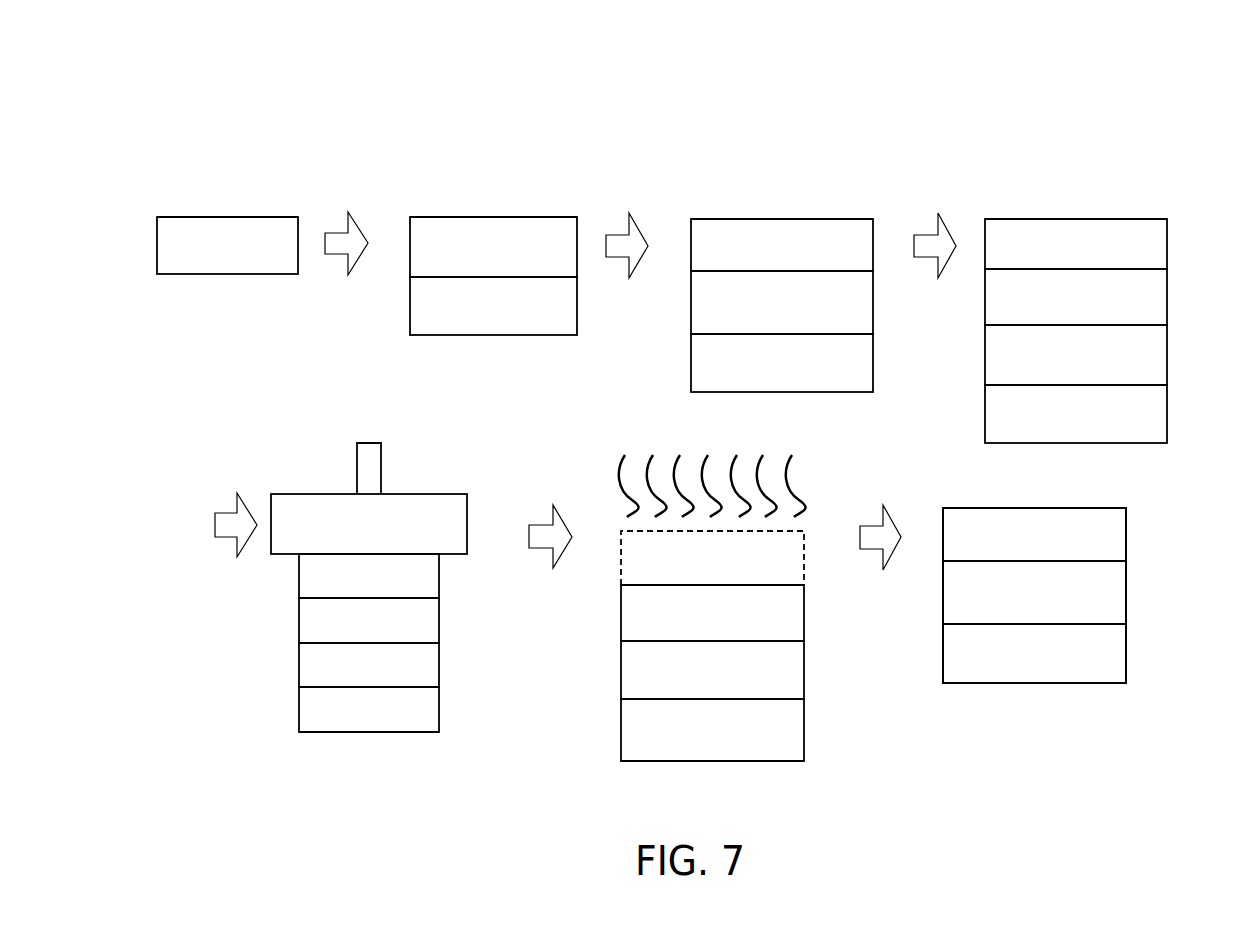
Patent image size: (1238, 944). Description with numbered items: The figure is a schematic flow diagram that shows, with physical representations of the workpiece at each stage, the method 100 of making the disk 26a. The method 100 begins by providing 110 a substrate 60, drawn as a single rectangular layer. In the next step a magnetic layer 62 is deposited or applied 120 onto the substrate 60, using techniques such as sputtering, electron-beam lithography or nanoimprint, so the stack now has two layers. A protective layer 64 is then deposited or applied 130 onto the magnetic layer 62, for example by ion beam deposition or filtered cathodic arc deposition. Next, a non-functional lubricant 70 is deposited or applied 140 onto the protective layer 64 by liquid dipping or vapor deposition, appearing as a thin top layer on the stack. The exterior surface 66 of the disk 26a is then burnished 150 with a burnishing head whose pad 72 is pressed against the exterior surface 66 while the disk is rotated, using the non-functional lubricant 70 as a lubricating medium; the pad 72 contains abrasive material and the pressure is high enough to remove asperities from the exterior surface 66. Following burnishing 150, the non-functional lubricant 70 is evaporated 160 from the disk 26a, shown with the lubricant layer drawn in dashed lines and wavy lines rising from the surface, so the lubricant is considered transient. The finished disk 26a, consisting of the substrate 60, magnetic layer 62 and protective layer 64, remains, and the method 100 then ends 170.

The method 100 is at (608, 161).
The providing step 110 is at (224, 184).
The applying step 120 is at (484, 197).
The applying step 130 is at (799, 197).
The applying step 140 is at (1065, 197).
The burnishing step 150 is at (393, 760).
The evaporating step 160 is at (812, 507).
The end step 170 is at (1144, 591).
The disk 26a is at (1146, 660).
The substrate 60 is at (173, 243).
The magnetic layer 62 is at (437, 252).
The protective layer 64 is at (699, 248).
The exterior surface 66 is at (420, 597).
The non-functional lubricant 70 is at (1010, 242).
The pad 72 is at (307, 527).